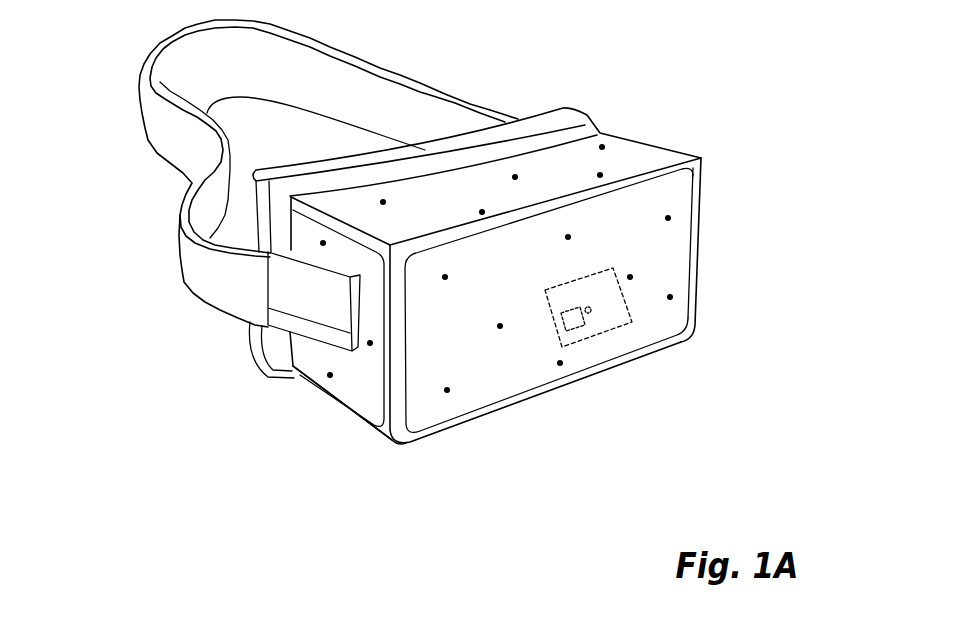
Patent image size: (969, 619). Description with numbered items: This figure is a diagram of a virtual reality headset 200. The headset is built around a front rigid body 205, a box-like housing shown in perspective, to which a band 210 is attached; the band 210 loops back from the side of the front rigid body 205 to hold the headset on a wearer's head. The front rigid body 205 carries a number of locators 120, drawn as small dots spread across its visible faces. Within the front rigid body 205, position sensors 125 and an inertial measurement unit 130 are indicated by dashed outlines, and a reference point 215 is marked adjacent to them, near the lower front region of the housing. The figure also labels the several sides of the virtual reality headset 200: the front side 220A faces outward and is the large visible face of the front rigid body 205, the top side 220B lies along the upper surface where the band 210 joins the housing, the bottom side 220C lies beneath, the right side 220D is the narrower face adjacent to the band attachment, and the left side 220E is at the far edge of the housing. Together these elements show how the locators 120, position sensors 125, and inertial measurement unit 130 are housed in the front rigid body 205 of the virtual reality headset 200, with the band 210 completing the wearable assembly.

The virtual reality headset 200 is at (59, 16).
The band 210 is at (426, 84).
The front rigid body 205 is at (700, 152).
The front side 220A is at (432, 418).
The top side 220B is at (348, 201).
The bottom side 220C is at (318, 422).
The right side 220D is at (362, 385).
The left side 220E is at (672, 146).
The locators 120 is at (679, 291).
The position sensors 125 is at (561, 337).
The inertial measurement unit 130 is at (640, 327).
The reference point 215 is at (594, 326).